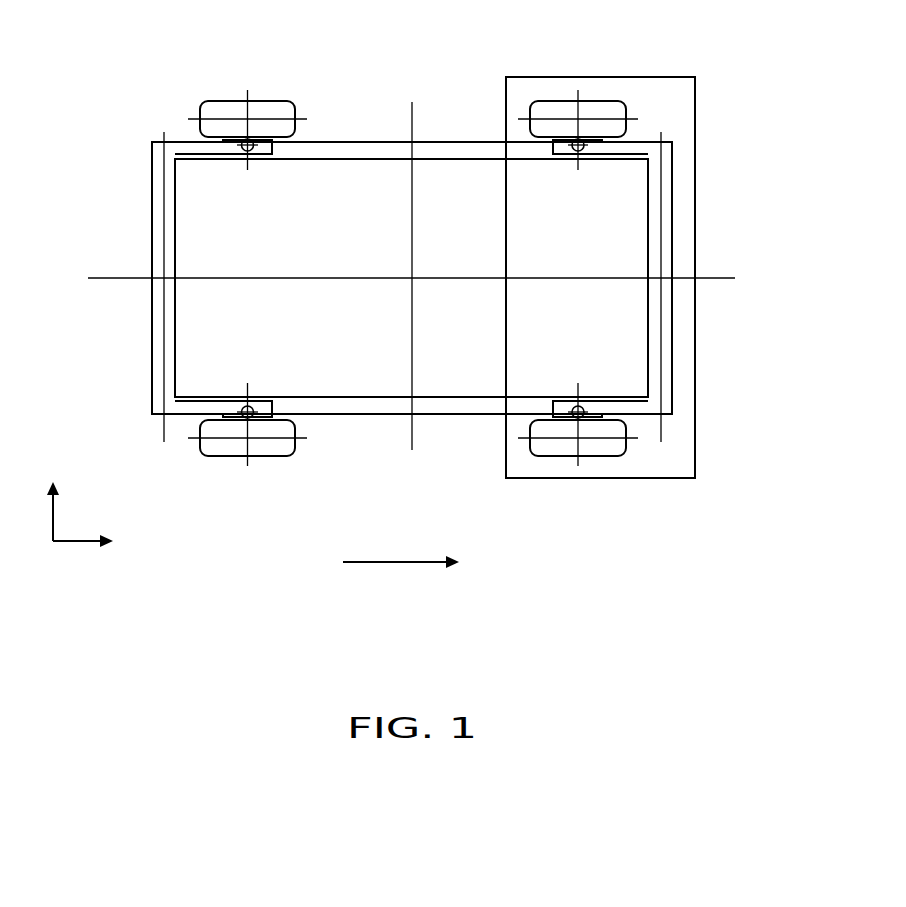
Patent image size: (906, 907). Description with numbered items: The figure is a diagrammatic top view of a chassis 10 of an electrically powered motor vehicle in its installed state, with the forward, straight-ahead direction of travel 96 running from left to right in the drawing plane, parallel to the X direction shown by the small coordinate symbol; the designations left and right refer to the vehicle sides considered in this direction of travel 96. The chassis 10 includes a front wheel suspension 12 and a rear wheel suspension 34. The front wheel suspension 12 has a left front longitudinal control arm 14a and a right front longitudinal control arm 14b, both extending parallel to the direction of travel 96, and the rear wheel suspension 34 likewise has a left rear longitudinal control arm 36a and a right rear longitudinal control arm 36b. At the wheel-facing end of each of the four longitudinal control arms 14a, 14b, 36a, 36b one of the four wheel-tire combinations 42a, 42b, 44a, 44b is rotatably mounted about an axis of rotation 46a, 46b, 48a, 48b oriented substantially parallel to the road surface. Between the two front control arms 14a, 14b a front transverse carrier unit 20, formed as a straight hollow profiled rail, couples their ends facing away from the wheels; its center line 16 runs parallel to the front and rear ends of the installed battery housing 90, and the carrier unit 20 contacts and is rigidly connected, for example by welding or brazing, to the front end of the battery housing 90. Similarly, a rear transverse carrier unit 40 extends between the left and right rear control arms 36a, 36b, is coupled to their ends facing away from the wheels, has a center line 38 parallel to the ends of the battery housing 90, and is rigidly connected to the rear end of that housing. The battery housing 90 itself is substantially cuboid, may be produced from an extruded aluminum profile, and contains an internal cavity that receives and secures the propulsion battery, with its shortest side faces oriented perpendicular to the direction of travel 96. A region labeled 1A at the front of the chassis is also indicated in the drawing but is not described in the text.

The chassis 10 is at (90, 28).
The front wheel suspension 12 is at (712, 345).
The side portion of support structure 1A is at (698, 123).
The front transverse carrier unit 20 is at (665, 210).
The rear transverse carrier unit 40 is at (158, 240).
The rear wheel suspension 34 is at (118, 329).
The center line 38 is at (163, 438).
The center line 16 is at (660, 435).
The left rear longitudinal control arm 36a is at (195, 148).
The right rear longitudinal control arm 36b is at (195, 410).
The left front longitudinal control arm 14a is at (623, 148).
The right front longitudinal control arm 14b is at (626, 408).
The wheel-tire combination 44a is at (223, 112).
The wheel-tire combination 44b is at (220, 447).
The wheel-tire combination 42a is at (599, 109).
The wheel-tire combination 42b is at (600, 447).
The axis of rotation 48a is at (248, 92).
The axis of rotation 48b is at (247, 463).
The axis of rotation 46a is at (578, 90).
The axis of rotation 46b is at (578, 457).
The battery housing 90 is at (387, 188).
The direction of travel 96 is at (390, 562).